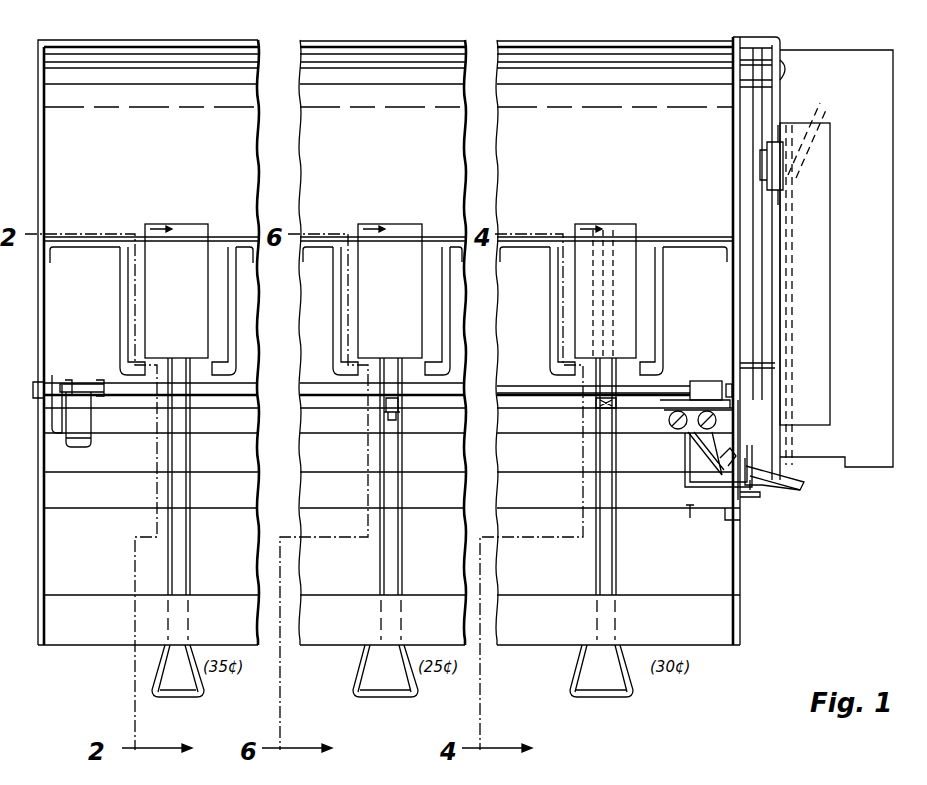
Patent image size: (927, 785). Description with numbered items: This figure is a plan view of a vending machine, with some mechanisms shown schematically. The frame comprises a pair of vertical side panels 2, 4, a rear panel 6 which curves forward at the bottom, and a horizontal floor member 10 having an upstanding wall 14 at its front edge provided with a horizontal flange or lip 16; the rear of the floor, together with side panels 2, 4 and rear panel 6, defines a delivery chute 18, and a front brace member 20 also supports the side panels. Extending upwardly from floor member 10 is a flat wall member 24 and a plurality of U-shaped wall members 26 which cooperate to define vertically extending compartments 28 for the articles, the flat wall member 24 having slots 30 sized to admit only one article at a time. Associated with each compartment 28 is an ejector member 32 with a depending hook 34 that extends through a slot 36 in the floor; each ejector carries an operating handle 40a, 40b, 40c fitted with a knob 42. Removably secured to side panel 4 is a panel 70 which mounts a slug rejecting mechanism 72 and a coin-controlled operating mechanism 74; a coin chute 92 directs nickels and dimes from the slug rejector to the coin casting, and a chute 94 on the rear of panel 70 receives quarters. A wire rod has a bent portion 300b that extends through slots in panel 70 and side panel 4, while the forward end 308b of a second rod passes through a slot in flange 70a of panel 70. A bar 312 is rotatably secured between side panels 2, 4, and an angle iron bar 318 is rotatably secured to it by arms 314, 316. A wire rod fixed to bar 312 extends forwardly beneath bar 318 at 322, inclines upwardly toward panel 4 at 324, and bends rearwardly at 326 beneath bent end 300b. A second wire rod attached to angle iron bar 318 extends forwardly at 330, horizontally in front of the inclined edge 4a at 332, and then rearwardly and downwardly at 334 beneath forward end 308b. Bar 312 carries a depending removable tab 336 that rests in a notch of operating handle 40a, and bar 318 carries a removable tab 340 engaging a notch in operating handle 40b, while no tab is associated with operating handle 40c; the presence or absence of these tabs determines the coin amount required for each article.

The vertical side panel 2 is at (38, 148).
The vertical side panel 4 is at (733, 133).
The inclined edge of side panel 4a is at (740, 528).
The rear panel 6 is at (384, 40).
The horizontal floor member 10 is at (62, 300).
The upstanding wall 14 is at (690, 512).
The horizontal flange or lip 16 is at (642, 498).
The delivery chute 18 is at (152, 158).
The front brace member 20 is at (716, 612).
The flat wall member 24 is at (238, 234).
The U-shaped wall member 26 is at (232, 280).
The compartment 28 is at (218, 310).
The slot 30 is at (648, 240).
The ejector member 32 is at (182, 306).
The depending hook 34 is at (616, 303).
The slot 36 is at (610, 263).
The operating handle 40a is at (614, 573).
The operating handle 40b is at (402, 562).
The operating handle 40c is at (186, 552).
The knob 42 is at (372, 662).
The panel 70 is at (783, 97).
The flange of panel 70a is at (830, 470).
The slug rejecting mechanism 72 is at (820, 144).
The coin-controlled operating mechanism 74 is at (870, 460).
The coin chute 92 is at (815, 278).
The chute 94 is at (768, 157).
The bent portion of wire rod 300b is at (758, 455).
The forward end of rod 308b is at (786, 484).
The bar 312 is at (236, 383).
The arm 314 is at (62, 383).
The arm 316 is at (727, 385).
The angle iron bar 318 is at (232, 424).
The forward extending portion of wire rod 322 is at (698, 410).
The inclined portion of wire rod 324 is at (706, 450).
The rearwardly bent portion of wire rod 326 is at (716, 460).
The forward extending portion of second wire rod 330 is at (684, 481).
The horizontal portion of second wire rod 332 is at (748, 494).
The rearwardly and downwardly extending portion of second wire rod 334 is at (760, 468).
The removable tab 336 is at (578, 405).
The removable tab 340 is at (398, 405).